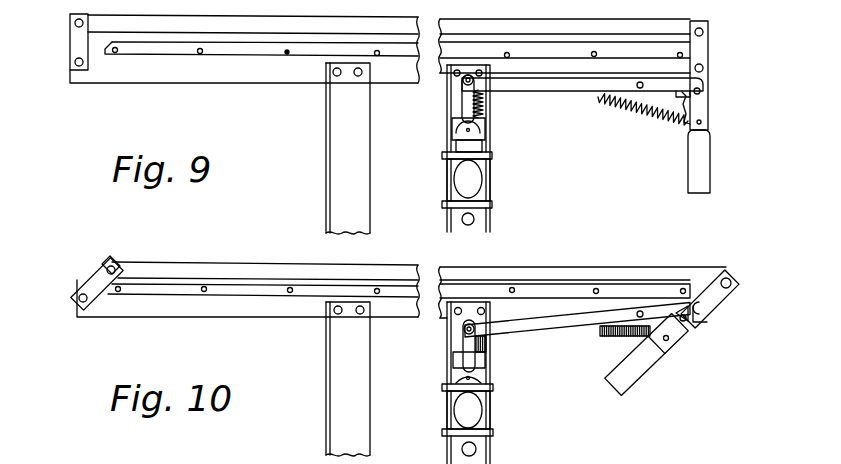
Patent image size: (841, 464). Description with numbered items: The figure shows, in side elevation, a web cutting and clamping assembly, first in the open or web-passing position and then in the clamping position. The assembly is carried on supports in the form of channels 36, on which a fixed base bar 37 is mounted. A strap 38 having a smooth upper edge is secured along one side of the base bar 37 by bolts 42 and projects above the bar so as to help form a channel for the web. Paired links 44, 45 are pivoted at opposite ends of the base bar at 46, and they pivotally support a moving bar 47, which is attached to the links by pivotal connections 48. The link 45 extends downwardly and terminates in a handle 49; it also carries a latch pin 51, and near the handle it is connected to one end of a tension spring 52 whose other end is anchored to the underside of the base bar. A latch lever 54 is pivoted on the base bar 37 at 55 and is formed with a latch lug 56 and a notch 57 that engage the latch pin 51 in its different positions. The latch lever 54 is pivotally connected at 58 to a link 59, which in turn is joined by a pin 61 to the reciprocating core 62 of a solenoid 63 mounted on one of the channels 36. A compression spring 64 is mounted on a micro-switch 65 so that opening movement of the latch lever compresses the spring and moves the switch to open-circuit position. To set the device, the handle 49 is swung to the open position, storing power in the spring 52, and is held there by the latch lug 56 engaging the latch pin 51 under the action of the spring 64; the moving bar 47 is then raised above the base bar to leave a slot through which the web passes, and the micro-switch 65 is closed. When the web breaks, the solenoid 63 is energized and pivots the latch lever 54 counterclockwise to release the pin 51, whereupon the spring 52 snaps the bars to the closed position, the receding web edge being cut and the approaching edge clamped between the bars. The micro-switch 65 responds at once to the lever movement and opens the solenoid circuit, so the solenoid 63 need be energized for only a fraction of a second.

In FIG. 9, the channels 36 is at (341, 160).
In FIG. 10, the channels 36 is at (478, 445).
In FIG. 9, the fixed base bar 37 is at (107, 67).
In FIG. 10, the fixed base bar 37 is at (140, 305).
In FIG. 9, the strap 38 is at (213, 52).
In FIG. 10, the strap 38 is at (247, 288).
In FIG. 9, the bolts 42 is at (287, 53).
In FIG. 9, the link 44 is at (80, 43).
In FIG. 10, the link 44 is at (98, 282).
In FIG. 9, the link 45 is at (703, 45).
In FIG. 10, the link 45 is at (712, 292).
In FIG. 9, the pivot 46 is at (73, 68).
In FIG. 9, the moving bar 47 is at (272, 25).
In FIG. 10, the moving bar 47 is at (332, 272).
In FIG. 10, the pivotal connections 48 is at (114, 266).
In FIG. 9, the handle 49 is at (697, 155).
In FIG. 10, the handle 49 is at (630, 368).
In FIG. 9, the latch pin 51 is at (701, 92).
In FIG. 10, the latch pin 51 is at (686, 322).
In FIG. 9, the tension spring 52 is at (650, 107).
In FIG. 10, the tension spring 52 is at (612, 336).
In FIG. 9, the latch lever 54 is at (582, 82).
In FIG. 10, the latch lever 54 is at (584, 320).
In FIG. 9, the pivot 55 is at (639, 88).
In FIG. 10, the pivot 55 is at (641, 310).
In FIG. 9, the latch lug 56 is at (684, 107).
In FIG. 10, the latch lug 56 is at (689, 319).
In FIG. 9, the notch 57 is at (682, 96).
In FIG. 10, the notch 57 is at (680, 324).
In FIG. 9, the pivotal connection 58 is at (455, 88).
In FIG. 10, the pivotal connection 58 is at (465, 328).
In FIG. 9, the link 59 is at (465, 102).
In FIG. 10, the link 59 is at (468, 342).
In FIG. 9, the pin 61 is at (462, 133).
In FIG. 10, the pin 61 is at (460, 383).
In FIG. 9, the reciprocating core 62 is at (494, 143).
In FIG. 10, the reciprocating core 62 is at (494, 384).
In FIG. 9, the solenoid 63 is at (467, 177).
In FIG. 10, the solenoid 63 is at (470, 408).
In FIG. 9, the compression spring 64 is at (485, 109).
In FIG. 10, the compression spring 64 is at (488, 342).
In FIG. 9, the micro-switch 65 is at (483, 126).
In FIG. 10, the micro-switch 65 is at (486, 362).